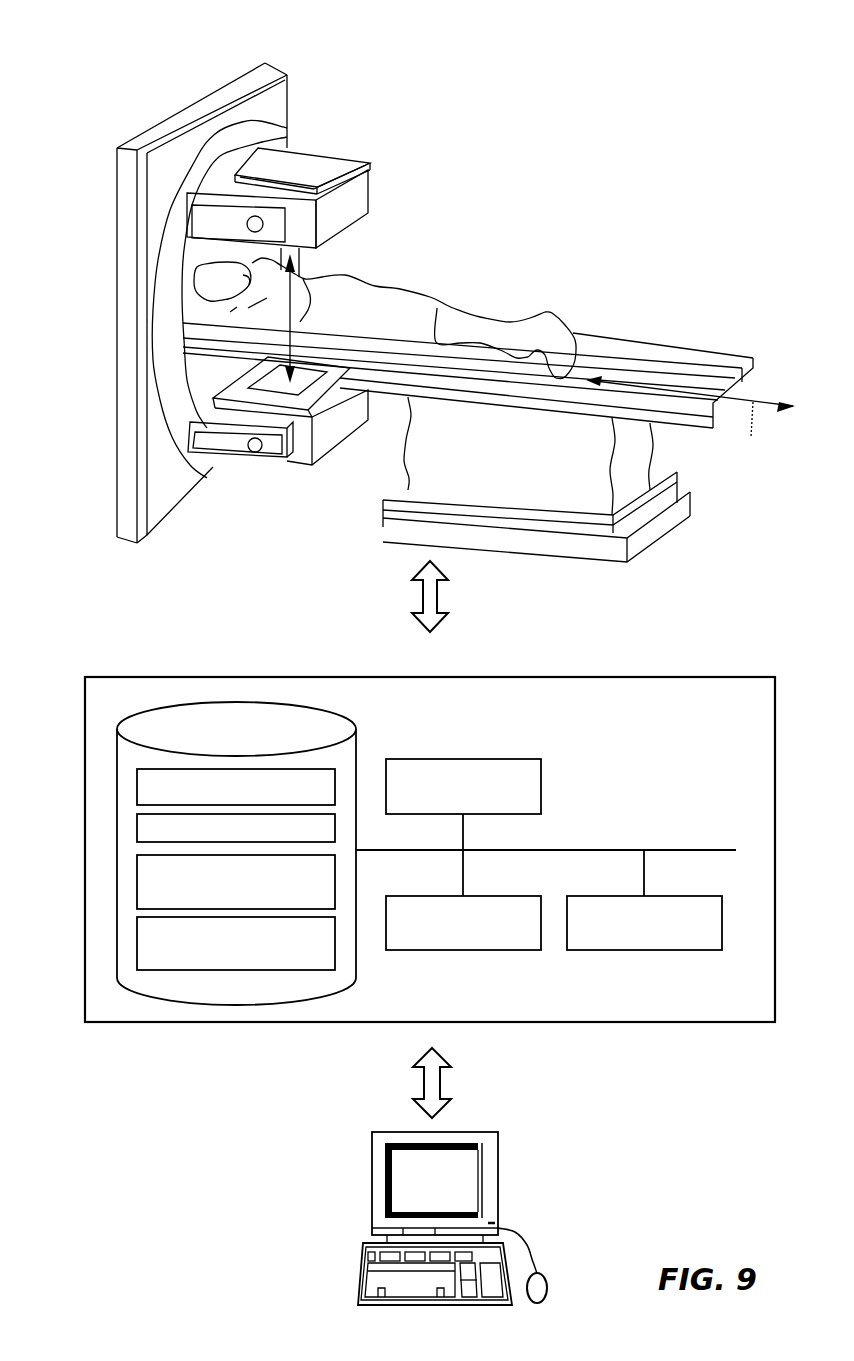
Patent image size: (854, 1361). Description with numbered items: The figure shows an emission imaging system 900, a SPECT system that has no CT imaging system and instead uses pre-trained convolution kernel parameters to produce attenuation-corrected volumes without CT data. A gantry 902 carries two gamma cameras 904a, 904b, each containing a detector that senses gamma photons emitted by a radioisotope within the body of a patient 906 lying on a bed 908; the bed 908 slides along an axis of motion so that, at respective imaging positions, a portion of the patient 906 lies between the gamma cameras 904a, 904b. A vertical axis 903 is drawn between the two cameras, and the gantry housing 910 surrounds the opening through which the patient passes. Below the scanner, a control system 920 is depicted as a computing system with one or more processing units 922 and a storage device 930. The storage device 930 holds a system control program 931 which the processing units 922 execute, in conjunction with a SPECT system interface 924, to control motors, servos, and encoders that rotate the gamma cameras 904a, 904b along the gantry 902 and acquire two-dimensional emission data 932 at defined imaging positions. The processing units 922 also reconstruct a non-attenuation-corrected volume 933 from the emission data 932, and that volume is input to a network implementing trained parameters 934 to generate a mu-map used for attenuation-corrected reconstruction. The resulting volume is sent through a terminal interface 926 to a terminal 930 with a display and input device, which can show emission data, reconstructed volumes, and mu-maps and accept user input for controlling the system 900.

The system 900 is at (114, 31).
The gantry 902 is at (207, 480).
The detector axis 903 is at (303, 284).
The gamma camera 904a is at (323, 443).
The gamma camera 904b is at (360, 197).
The patient 906 is at (480, 320).
The bed 908 is at (563, 327).
The gantry housing 910 is at (286, 52).
The control system 920 is at (752, 709).
The processing units 922 is at (488, 895).
The SPECT system interface 924 is at (488, 759).
The terminal interface 926 is at (675, 895).
The storage device 930 is at (343, 704).
The system control program 931 is at (137, 785).
The emission data 932 is at (137, 828).
The non-attenuation-corrected volume 933 is at (137, 864).
The trained parameters 934 is at (137, 945).